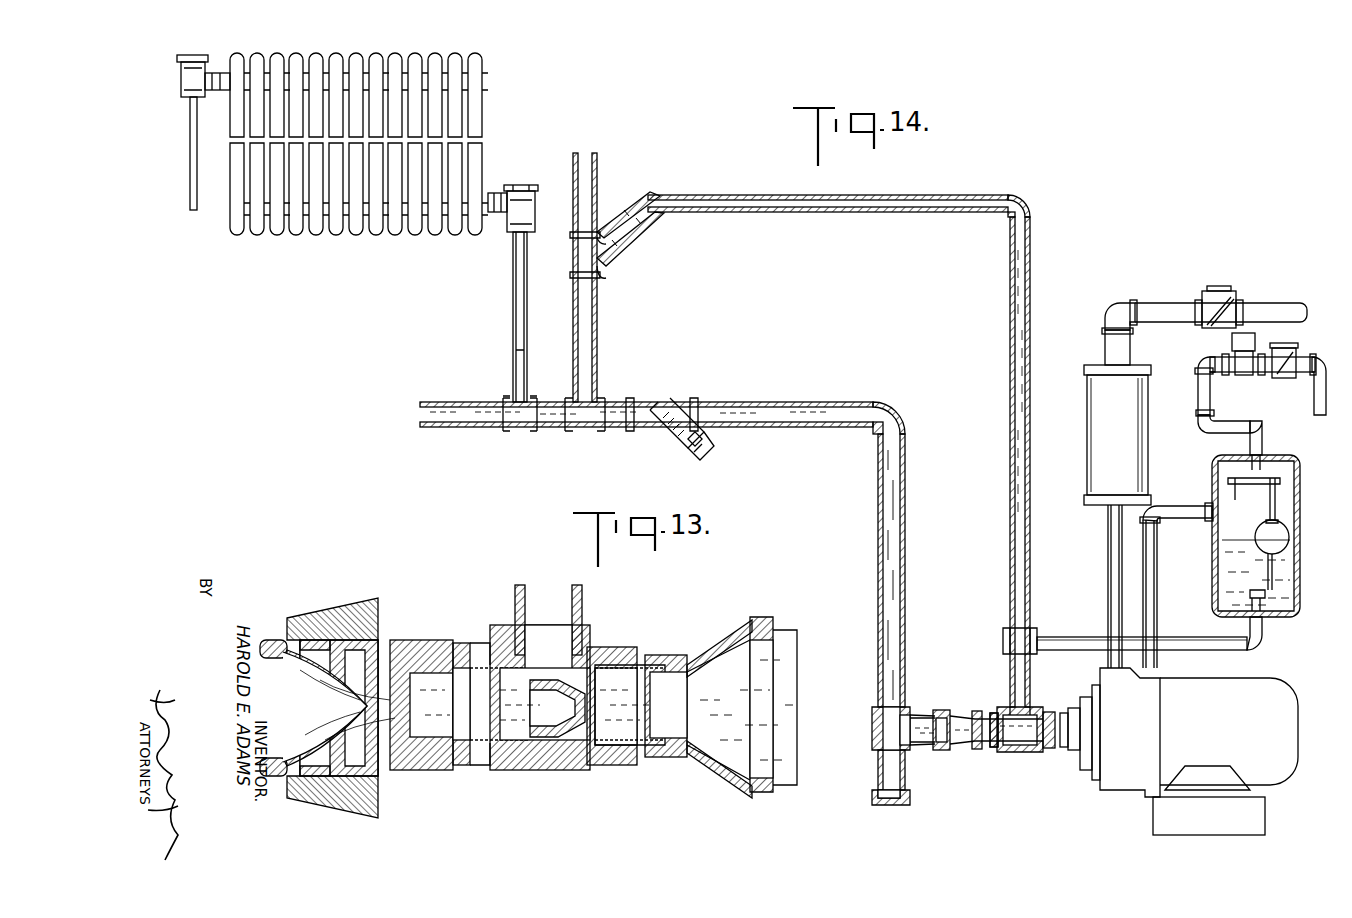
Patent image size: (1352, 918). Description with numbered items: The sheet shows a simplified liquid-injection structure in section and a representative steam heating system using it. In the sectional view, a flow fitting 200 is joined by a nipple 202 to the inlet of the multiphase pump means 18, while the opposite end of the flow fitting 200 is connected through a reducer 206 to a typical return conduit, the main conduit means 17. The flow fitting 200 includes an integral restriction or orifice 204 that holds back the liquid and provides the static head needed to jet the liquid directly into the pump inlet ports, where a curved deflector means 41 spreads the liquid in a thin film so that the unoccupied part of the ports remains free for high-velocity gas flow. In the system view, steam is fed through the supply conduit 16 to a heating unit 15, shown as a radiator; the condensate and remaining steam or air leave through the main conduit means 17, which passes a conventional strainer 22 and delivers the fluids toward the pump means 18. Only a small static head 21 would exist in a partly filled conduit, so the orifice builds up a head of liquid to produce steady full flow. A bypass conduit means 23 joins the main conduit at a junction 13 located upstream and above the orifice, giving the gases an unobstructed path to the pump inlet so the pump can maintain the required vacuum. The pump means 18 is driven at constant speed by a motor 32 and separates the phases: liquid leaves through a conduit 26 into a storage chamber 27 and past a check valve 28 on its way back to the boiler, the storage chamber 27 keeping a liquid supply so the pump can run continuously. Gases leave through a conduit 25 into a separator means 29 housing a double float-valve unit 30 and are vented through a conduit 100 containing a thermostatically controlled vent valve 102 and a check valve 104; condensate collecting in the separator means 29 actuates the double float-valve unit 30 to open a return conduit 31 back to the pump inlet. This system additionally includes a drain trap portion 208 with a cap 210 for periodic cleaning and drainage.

In FIG. 14, the junction 13 is at (612, 260).
In FIG. 14, the heating unit 15 is at (499, 130).
In FIG. 14, the supply conduit 16 is at (188, 173).
In FIG. 13, the main conduit means 17 is at (795, 786).
In FIG. 14, the pump means 18 is at (1062, 765).
In FIG. 13, the pump means 18 is at (405, 618).
In FIG. 14, the static head 21 is at (452, 412).
In FIG. 14, the strainer 22 is at (672, 452).
In FIG. 14, the bypass conduit means 23 is at (1010, 440).
In FIG. 13, the bypass conduit means 23 is at (515, 610).
In FIG. 14, the conduit 25 is at (1158, 582).
In FIG. 14, the conduit 26 is at (1106, 576).
In FIG. 14, the storage chamber 27 is at (1148, 422).
In FIG. 14, the check valve 28 is at (1232, 298).
In FIG. 14, the separator means 29 is at (1300, 510).
In FIG. 14, the double float-valve unit 30 is at (1282, 574).
In FIG. 14, the return conduit 31 is at (1188, 650).
In FIG. 14, the motor 32 is at (1210, 738).
In FIG. 13, the deflector means 41 is at (310, 690).
In FIG. 14, the conduit 100 is at (1228, 370).
In FIG. 14, the thermostatically controlled vent valve 102 is at (1232, 344).
In FIG. 14, the check valve 104 is at (1288, 346).
In FIG. 14, the flow fitting 200 is at (996, 712).
In FIG. 13, the flow fitting 200 is at (612, 648).
In FIG. 13, the nipple 202 is at (480, 650).
In FIG. 13, the orifice 204 is at (565, 726).
In FIG. 13, the reducer 206 is at (702, 660).
In FIG. 14, the drain trap portion 208 is at (878, 768).
In FIG. 14, the cap 210 is at (892, 805).